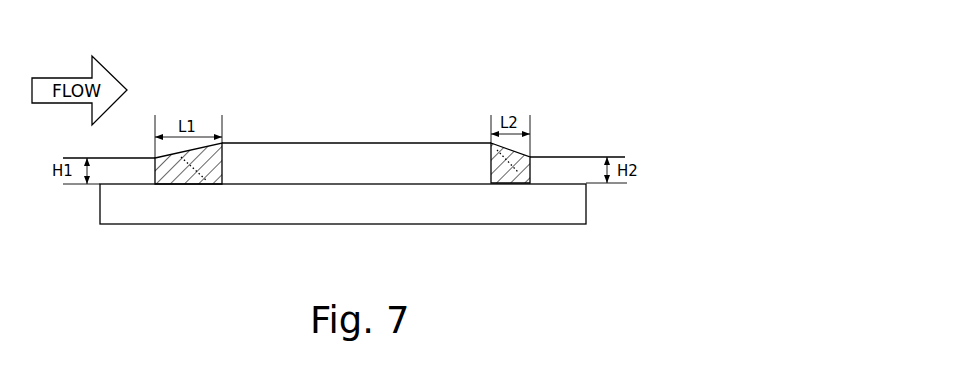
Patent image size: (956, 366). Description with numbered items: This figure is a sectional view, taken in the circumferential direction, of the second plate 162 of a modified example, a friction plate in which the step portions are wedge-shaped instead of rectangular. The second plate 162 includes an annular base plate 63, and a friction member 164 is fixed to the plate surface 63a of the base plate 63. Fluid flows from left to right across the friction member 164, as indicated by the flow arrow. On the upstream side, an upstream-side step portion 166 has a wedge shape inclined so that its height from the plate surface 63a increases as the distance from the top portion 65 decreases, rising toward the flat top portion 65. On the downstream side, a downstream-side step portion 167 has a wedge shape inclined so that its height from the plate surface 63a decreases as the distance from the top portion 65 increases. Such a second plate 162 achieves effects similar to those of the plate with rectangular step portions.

The base plate 63 is at (604, 210).
The plate surface 63a is at (550, 173).
The top portion 65 is at (280, 143).
The second plate 162 is at (385, 136).
The friction member 164 is at (404, 136).
The upstream-side step portion 166 is at (175, 184).
The downstream-side step portion 167 is at (492, 183).